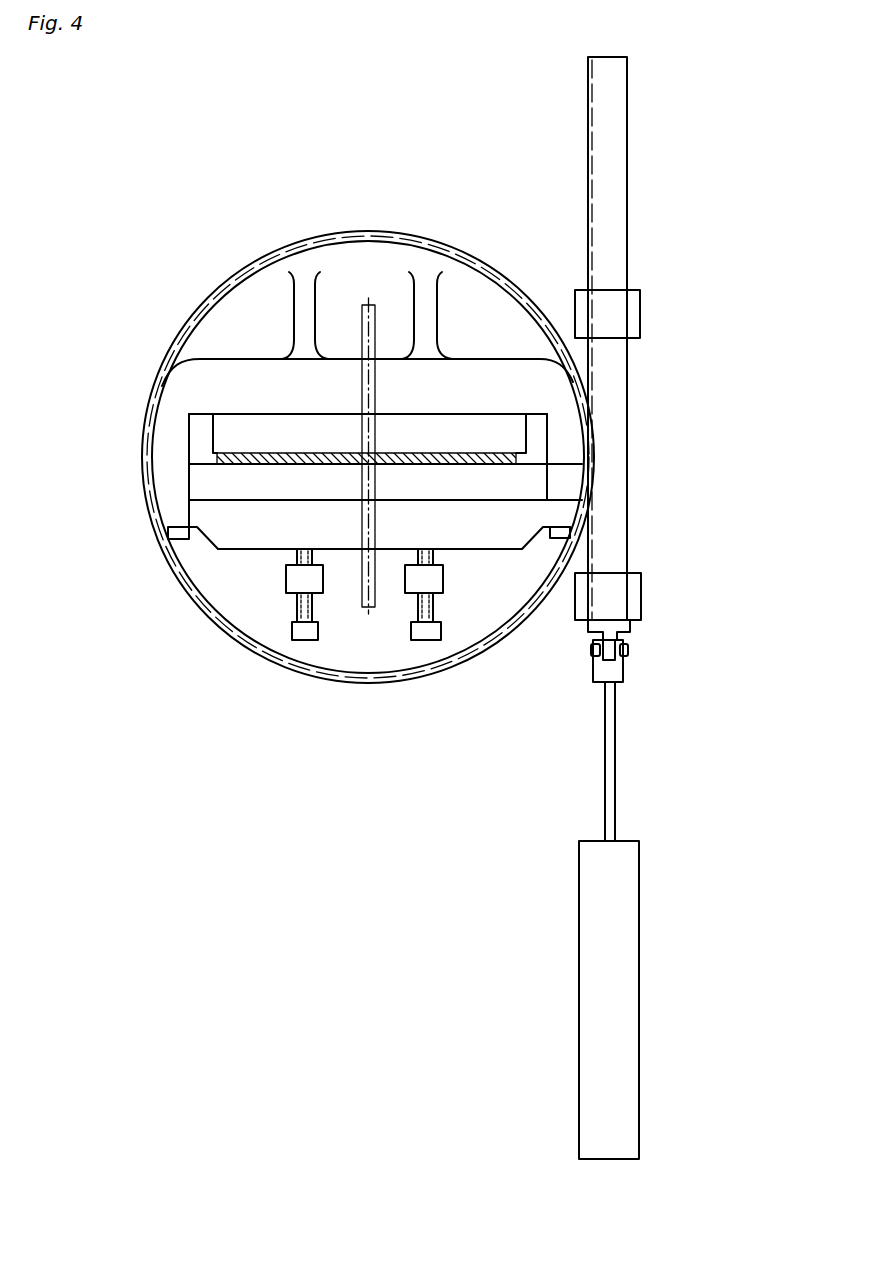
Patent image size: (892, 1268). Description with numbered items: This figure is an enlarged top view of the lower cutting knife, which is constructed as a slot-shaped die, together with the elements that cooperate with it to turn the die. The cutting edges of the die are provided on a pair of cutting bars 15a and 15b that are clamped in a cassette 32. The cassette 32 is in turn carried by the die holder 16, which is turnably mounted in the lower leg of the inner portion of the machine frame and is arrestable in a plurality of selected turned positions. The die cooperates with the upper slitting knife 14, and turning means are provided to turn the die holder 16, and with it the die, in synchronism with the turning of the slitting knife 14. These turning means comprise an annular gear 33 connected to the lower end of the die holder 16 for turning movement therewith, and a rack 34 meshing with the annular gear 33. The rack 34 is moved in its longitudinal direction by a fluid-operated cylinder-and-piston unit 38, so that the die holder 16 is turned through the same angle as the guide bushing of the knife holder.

The die holder 16 is at (315, 255).
The cassette 32 is at (299, 329).
The cutting bar 15a is at (222, 445).
The cutting bar 15b is at (304, 552).
The upper cutting knife 14 is at (510, 461).
The annular gear 33 is at (502, 275).
The rack 34 is at (621, 368).
The fluid-operated cylinder-and-piston unit 38 is at (627, 885).